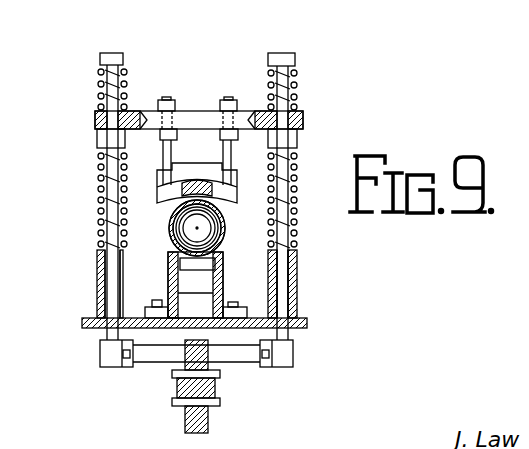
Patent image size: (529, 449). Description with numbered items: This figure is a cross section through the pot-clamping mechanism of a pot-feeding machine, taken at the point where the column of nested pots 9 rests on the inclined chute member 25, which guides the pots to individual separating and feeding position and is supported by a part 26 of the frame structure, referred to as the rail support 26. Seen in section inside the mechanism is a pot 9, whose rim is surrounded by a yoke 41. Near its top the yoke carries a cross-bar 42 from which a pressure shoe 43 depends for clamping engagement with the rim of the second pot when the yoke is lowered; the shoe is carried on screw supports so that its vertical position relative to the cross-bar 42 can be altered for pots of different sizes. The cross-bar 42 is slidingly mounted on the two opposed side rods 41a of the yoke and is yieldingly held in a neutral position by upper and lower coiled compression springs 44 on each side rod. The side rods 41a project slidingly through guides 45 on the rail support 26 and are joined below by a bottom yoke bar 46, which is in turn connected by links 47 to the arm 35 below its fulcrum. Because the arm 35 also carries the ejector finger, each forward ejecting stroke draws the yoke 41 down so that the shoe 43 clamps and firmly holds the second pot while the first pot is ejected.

The nested pots 9 is at (168, 228).
The inclined chute member 25 is at (222, 262).
The rail support 26 is at (82, 322).
The arm 35 is at (183, 428).
The yoke 41 is at (304, 352).
The side rods 41a is at (112, 227).
The cross-bar 42 is at (210, 110).
The pressure shoe 43 is at (228, 199).
The coiled compression springs 44 is at (100, 82).
The guides 45 is at (97, 283).
The bottom yoke bar 46 is at (154, 358).
The links 47 is at (220, 388).